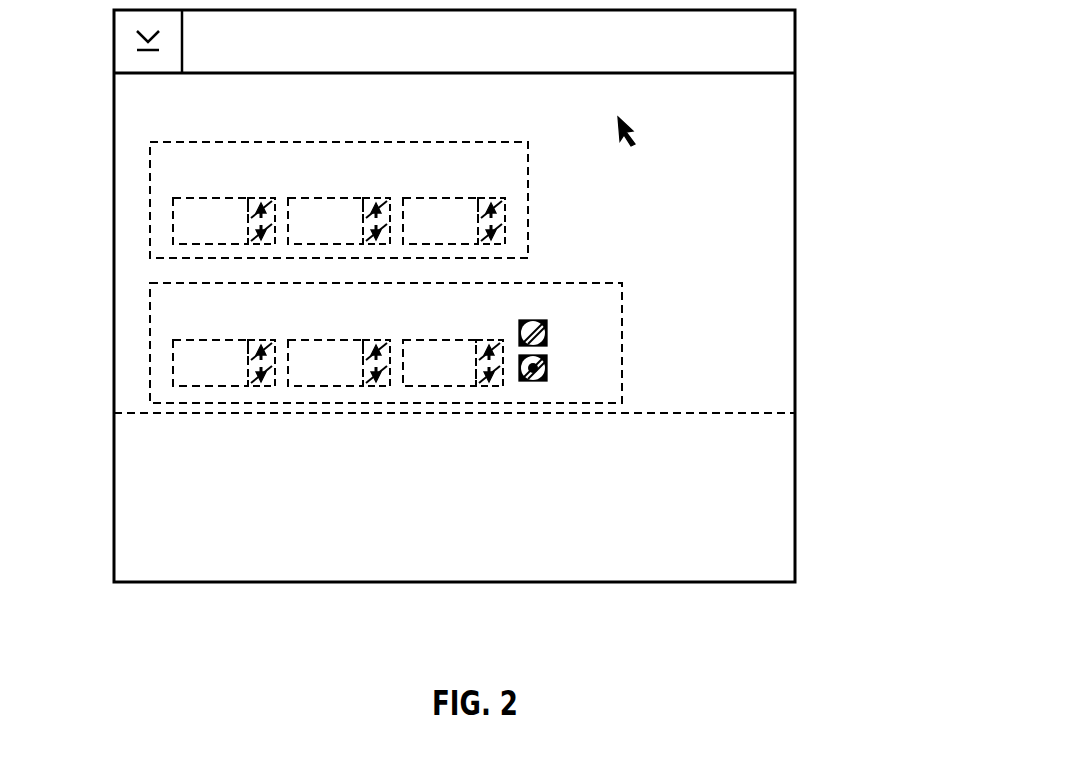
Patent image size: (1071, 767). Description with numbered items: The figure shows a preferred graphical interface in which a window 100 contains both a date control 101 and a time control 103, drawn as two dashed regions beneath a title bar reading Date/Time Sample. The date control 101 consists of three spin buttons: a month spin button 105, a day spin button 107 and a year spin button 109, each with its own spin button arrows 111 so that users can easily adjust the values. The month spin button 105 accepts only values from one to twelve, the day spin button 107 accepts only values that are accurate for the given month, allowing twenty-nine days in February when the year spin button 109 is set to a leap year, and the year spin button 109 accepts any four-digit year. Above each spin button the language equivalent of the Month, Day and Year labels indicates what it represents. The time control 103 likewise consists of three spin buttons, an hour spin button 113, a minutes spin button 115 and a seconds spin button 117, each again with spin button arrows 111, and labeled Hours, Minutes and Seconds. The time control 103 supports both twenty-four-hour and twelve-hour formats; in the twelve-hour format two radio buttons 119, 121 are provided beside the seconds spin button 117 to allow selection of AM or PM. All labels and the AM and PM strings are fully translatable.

The window 100 is at (797, 548).
The date control 101 is at (150, 212).
The time control 103 is at (150, 373).
The month spin button 105 is at (243, 196).
The day spin button 107 is at (347, 196).
The year spin button 109 is at (465, 196).
The spin button arrows 111 is at (480, 200).
The hour spin button 113 is at (223, 386).
The minutes spin button 115 is at (338, 386).
The seconds spin button 117 is at (423, 386).
The AM radio button 119 is at (605, 332).
The PM radio button 121 is at (605, 375).